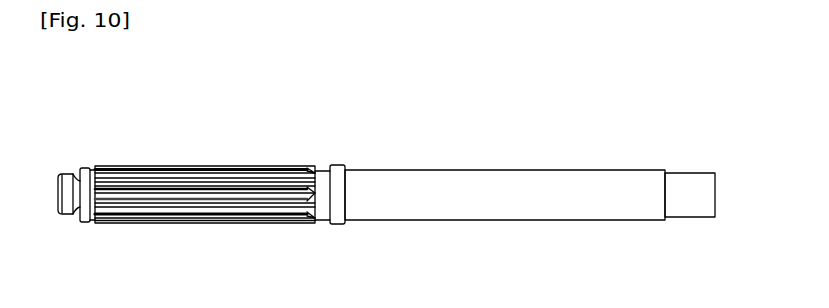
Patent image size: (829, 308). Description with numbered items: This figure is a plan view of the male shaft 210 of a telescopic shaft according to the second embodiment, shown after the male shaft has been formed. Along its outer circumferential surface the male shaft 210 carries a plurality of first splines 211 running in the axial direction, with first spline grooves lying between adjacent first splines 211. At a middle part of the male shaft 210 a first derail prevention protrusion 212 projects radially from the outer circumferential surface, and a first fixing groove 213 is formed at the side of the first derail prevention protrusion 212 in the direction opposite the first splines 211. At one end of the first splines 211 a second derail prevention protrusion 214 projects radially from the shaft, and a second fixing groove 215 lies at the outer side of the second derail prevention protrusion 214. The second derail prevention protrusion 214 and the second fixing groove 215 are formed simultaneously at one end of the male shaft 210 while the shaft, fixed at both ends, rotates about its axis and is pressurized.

The male shaft 210 is at (492, 128).
The first splines 211 is at (207, 180).
The first derail prevention protrusion 212 is at (315, 167).
The first fixing groove 213 is at (329, 167).
The second derail prevention protrusion 214 is at (83, 223).
The second fixing groove 215 is at (76, 168).